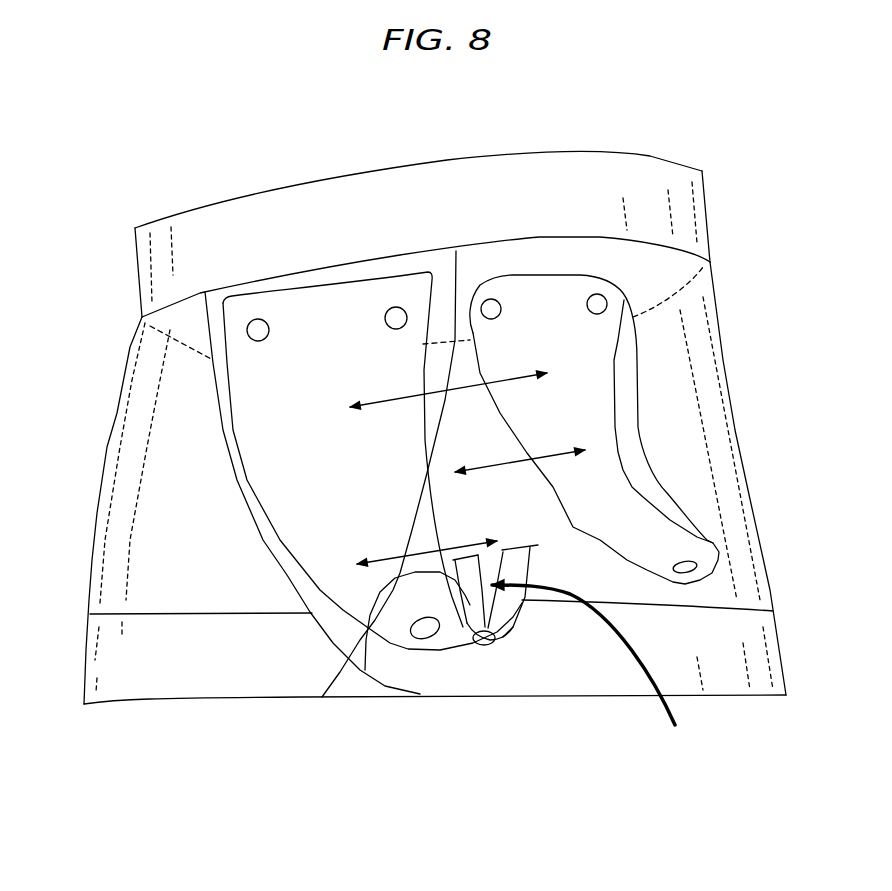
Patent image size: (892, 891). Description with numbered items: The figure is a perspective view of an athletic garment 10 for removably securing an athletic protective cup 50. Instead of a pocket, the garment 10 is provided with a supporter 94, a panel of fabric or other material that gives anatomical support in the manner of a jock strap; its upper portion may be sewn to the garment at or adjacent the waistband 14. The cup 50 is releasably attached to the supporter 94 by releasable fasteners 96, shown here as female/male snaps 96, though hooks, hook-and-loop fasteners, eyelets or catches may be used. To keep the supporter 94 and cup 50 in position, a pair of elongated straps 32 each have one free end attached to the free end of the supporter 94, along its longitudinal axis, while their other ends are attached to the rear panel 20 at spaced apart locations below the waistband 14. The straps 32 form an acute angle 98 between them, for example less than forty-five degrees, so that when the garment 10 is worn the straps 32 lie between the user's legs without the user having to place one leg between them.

The garment 10 is at (414, 140).
The waistband 14 is at (422, 234).
The rear panel 20 is at (632, 429).
The elongated straps 32 is at (322, 697).
The athletic protective cup 50 is at (627, 343).
The supporter 94 is at (288, 483).
The fasteners 96 is at (533, 435).
The angle 98 is at (590, 667).